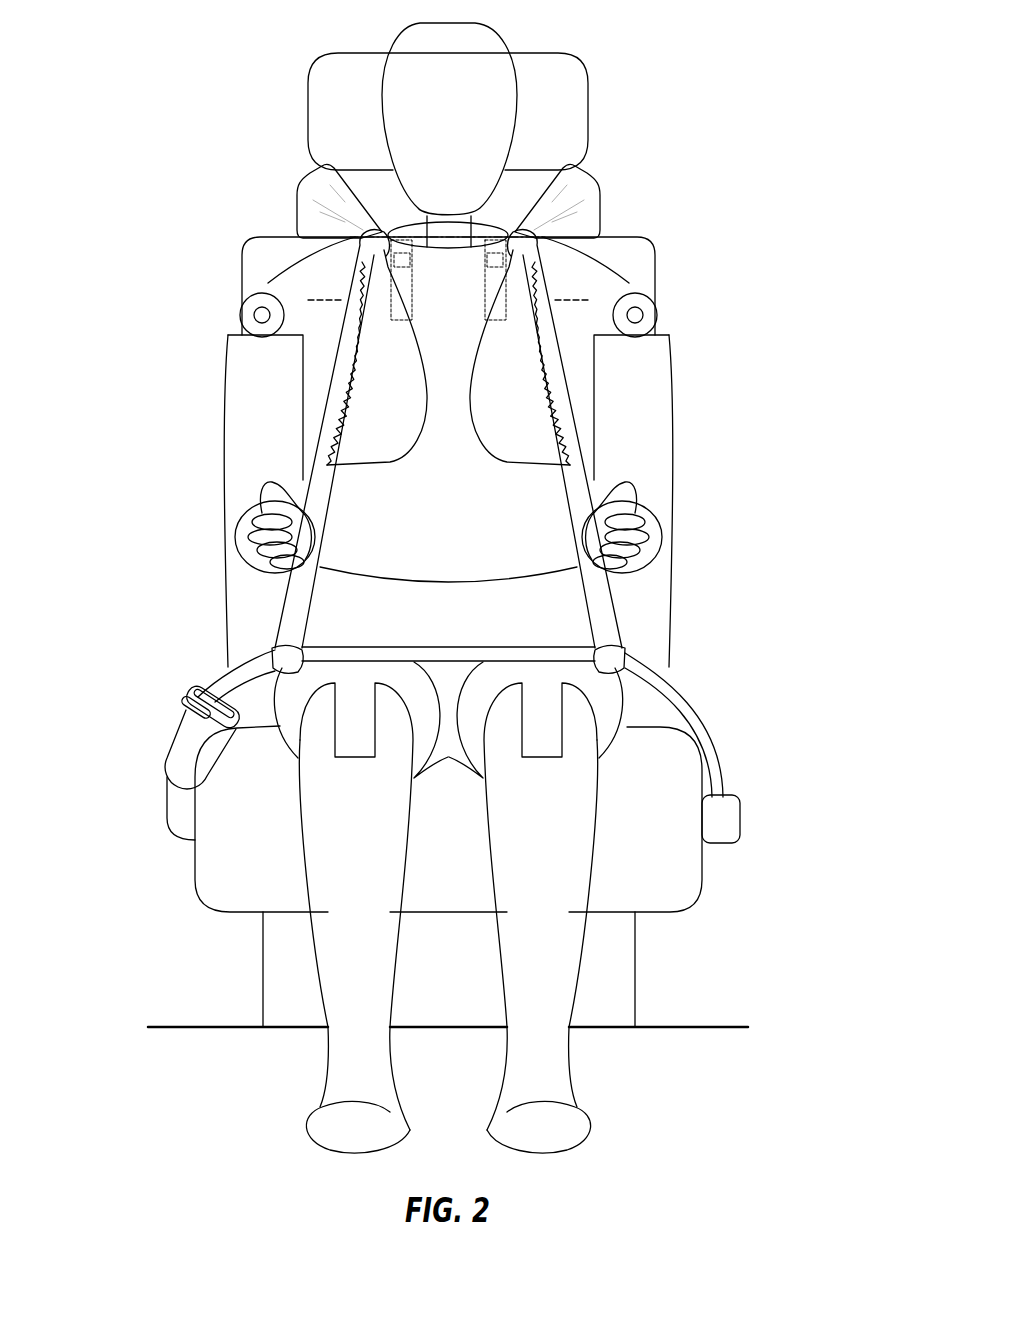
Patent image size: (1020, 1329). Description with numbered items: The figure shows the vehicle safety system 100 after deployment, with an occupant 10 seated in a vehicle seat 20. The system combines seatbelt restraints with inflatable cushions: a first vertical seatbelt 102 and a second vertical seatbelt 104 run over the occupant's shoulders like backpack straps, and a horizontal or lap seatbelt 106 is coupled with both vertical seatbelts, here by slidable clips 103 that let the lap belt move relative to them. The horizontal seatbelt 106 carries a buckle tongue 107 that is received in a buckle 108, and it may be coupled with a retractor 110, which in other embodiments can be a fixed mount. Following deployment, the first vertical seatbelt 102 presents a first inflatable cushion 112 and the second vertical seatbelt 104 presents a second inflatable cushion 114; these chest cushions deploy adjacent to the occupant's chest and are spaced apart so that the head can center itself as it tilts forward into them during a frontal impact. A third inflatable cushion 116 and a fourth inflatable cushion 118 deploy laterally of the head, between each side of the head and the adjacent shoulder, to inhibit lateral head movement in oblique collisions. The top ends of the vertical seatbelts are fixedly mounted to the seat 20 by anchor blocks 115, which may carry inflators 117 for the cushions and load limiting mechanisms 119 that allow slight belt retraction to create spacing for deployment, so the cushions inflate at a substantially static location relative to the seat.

The occupant 10 is at (487, 53).
The vehicle seat 20 is at (667, 865).
The vehicle safety system 100 is at (658, 48).
The first vertical seatbelt 102 is at (577, 478).
The slidable clips 103 is at (275, 657).
The second vertical seatbelt 104 is at (320, 478).
The horizontal seatbelt 106 is at (677, 694).
The buckle tongue 107 is at (190, 699).
The buckle 108 is at (183, 752).
The retractor 110 is at (733, 822).
The first inflatable cushion 112 is at (524, 367).
The second inflatable cushion 114 is at (373, 367).
The anchor blocks 115 is at (353, 245).
The third inflatable cushion 116 is at (590, 211).
The inflators 117 is at (452, 156).
The fourth inflatable cushion 118 is at (307, 211).
The load limiting mechanisms 119 is at (493, 146).